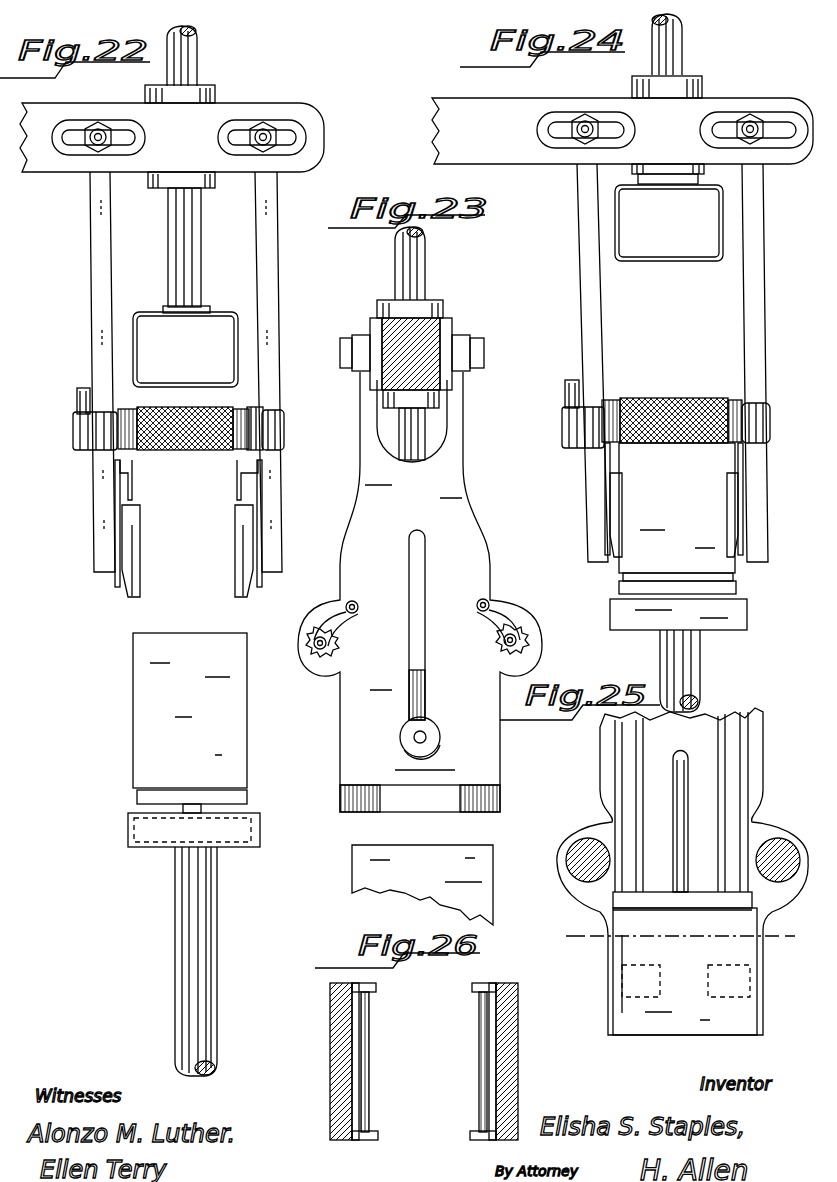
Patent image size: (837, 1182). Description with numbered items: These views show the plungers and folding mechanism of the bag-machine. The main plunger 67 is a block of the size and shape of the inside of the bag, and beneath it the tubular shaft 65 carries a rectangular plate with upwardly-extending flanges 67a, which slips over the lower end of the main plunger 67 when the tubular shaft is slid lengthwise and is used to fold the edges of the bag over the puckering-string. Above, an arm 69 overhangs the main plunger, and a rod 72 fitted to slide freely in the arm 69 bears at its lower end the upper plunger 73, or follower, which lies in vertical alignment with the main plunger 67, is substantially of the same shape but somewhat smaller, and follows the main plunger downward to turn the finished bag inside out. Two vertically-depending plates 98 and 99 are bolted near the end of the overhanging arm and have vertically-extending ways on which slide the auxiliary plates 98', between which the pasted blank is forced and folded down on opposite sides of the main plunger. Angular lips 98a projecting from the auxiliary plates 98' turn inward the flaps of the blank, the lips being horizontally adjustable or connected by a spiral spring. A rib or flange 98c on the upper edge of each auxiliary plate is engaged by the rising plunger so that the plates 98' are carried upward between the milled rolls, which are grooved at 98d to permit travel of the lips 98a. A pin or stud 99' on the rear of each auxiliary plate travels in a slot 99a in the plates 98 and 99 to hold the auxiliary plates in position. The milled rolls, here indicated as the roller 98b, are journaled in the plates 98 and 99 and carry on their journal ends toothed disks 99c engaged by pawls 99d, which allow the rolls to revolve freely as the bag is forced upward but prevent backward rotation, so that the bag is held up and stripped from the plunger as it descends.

In FIG. 22, the tubular shaft 65 is at (196, 880).
In FIG. 24, the tubular shaft 65 is at (688, 670).
In FIG. 22, the main plunger 67 is at (190, 723).
In FIG. 23, the main plunger 67 is at (422, 885).
In FIG. 24, the main plunger 67 is at (677, 518).
In FIG. 22, the flanged plate 67a is at (152, 826).
In FIG. 24, the flanged plate 67a is at (747, 614).
In FIG. 22, the arm 69 is at (172, 136).
In FIG. 23, the arm 69 is at (428, 330).
In FIG. 24, the arm 69 is at (622, 130).
In FIG. 22, the rod 72 is at (190, 250).
In FIG. 23, the rod 72 is at (412, 262).
In FIG. 24, the rod 72 is at (684, 40).
In FIG. 22, the upper plunger 73 is at (160, 352).
In FIG. 24, the upper plunger 73 is at (640, 222).
In FIG. 22, the depending plate 98 is at (78, 372).
In FIG. 23, the depending plate 98 is at (420, 578).
In FIG. 26, the depending plate 98 is at (320, 1061).
In FIG. 24, the depending plate 98 is at (592, 363).
In FIG. 22, the auxiliary plate 98' is at (188, 523).
In FIG. 23, the auxiliary plate 98' is at (420, 805).
In FIG. 26, the auxiliary plate 98' is at (424, 1061).
In FIG. 24, the auxiliary plate 98' is at (665, 499).
In FIG. 25, the auxiliary plate 98' is at (679, 971).
In FIG. 22, the angular lip 98a is at (240, 548).
In FIG. 26, the angular lip 98a is at (364, 992).
In FIG. 24, the angular lip 98a is at (615, 510).
In FIG. 25, the angular lip 98a is at (608, 985).
In FIG. 22, the knurled roller 98b is at (196, 447).
In FIG. 24, the knurled roller 98b is at (674, 398).
In FIG. 25, the knurled roller 98b is at (580, 855).
In FIG. 22, the rib or flange 98c is at (132, 472).
In FIG. 23, the rib or flange 98c is at (317, 652).
In FIG. 25, the rib or flange 98c is at (760, 900).
In FIG. 22, the groove 98d is at (118, 390).
In FIG. 23, the groove 98d is at (345, 606).
In FIG. 24, the groove 98d is at (614, 398).
In FIG. 22, the depending plate 99 is at (284, 372).
In FIG. 26, the depending plate 99 is at (523, 1061).
In FIG. 24, the depending plate 99 is at (755, 363).
In FIG. 25, the depending plate 99 is at (682, 871).
In FIG. 23, the pin or stud 99' is at (437, 733).
In FIG. 23, the slot 99a is at (414, 628).
In FIG. 25, the slot 99a is at (682, 806).
In FIG. 22, the toothed disk 99c is at (78, 452).
In FIG. 23, the toothed disk 99c is at (526, 640).
In FIG. 24, the toothed disk 99c is at (568, 442).
In FIG. 22, the pawl 99d is at (78, 400).
In FIG. 23, the pawl 99d is at (490, 604).
In FIG. 24, the pawl 99d is at (566, 388).